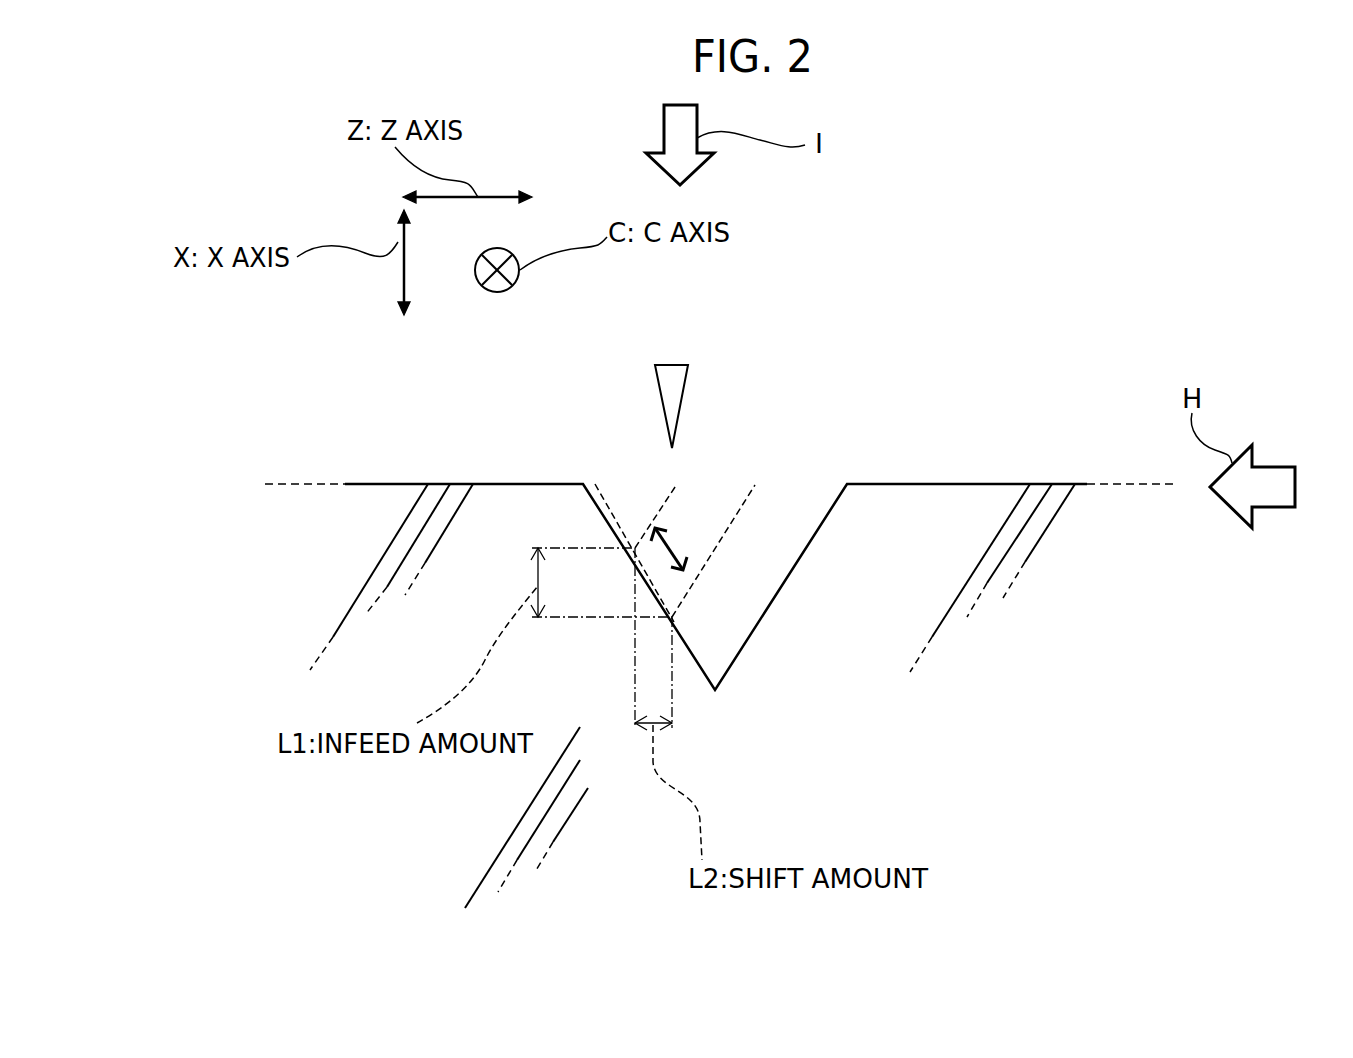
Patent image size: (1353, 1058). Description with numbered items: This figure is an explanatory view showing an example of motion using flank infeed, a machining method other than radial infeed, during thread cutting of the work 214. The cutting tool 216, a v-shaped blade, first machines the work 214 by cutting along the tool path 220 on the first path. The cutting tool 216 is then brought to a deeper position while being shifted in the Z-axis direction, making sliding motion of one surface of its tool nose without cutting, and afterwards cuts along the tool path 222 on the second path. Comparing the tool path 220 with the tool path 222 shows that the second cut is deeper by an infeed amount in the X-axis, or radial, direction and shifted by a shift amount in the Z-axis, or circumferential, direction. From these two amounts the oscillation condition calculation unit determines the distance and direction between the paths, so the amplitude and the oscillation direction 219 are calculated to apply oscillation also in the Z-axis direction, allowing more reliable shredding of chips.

The work 214 is at (415, 483).
The cutting tool 216 is at (672, 363).
The oscillation direction 219 is at (662, 515).
The tool path on the first path 220 is at (670, 497).
The tool path on the second path 222 is at (728, 528).